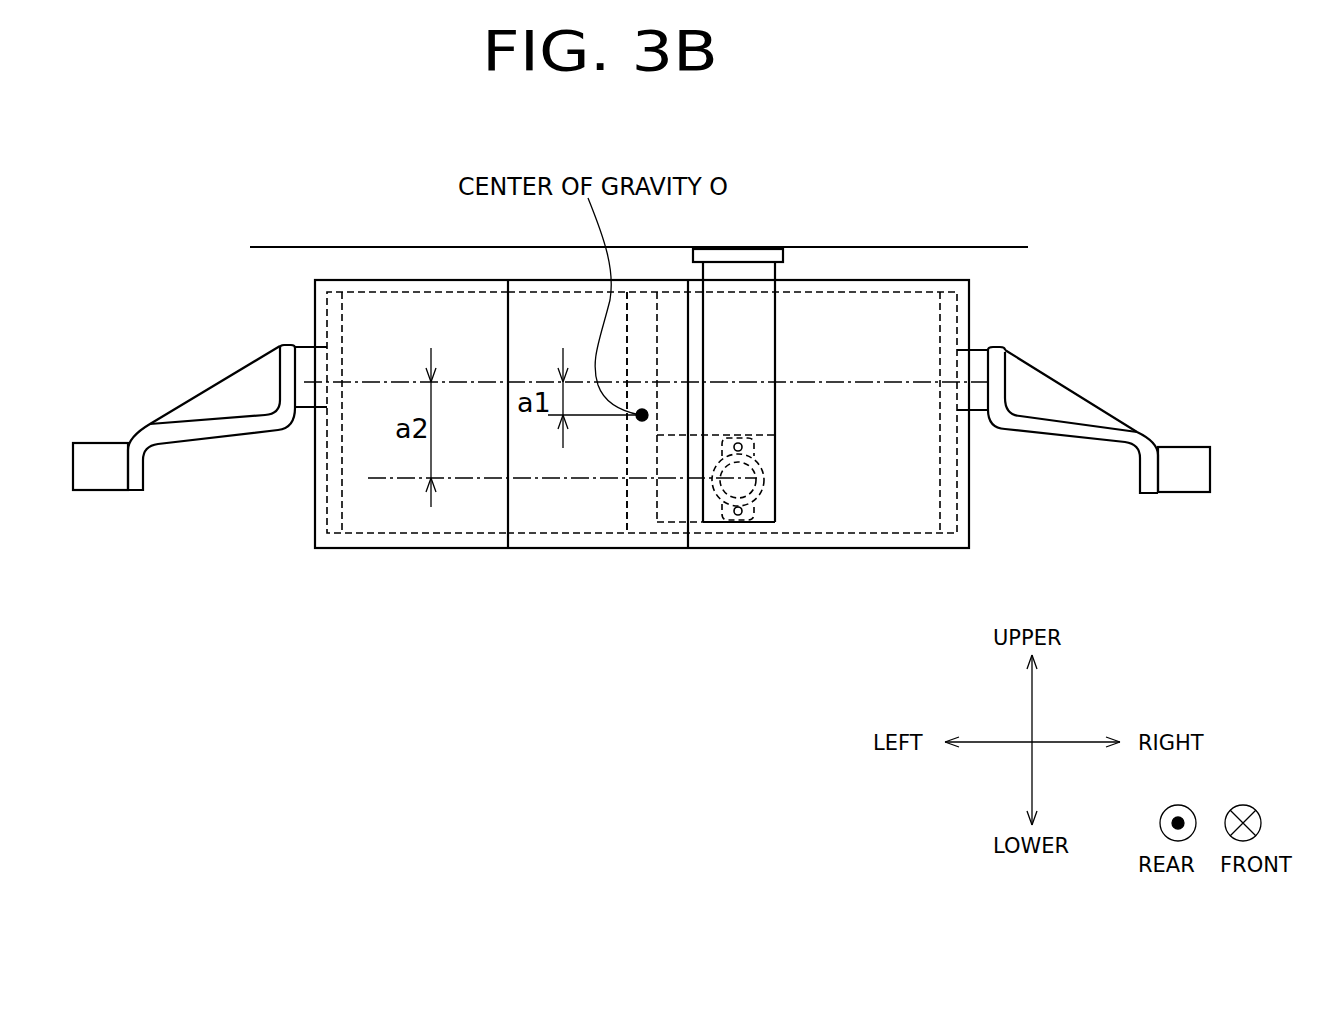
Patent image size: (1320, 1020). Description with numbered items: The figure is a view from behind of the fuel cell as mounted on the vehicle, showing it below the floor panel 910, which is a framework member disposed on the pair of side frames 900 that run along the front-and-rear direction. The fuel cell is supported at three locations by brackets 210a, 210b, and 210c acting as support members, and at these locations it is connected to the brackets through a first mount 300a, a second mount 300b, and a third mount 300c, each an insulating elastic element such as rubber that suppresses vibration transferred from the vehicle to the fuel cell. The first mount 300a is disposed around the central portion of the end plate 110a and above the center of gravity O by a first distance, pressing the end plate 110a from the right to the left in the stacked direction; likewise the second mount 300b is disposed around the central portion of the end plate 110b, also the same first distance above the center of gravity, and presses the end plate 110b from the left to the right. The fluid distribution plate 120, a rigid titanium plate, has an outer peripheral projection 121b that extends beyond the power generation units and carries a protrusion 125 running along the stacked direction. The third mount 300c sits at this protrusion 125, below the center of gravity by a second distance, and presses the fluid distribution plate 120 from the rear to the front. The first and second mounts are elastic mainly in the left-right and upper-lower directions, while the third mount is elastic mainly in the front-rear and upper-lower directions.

The floor panel 910 is at (457, 246).
The end plate 110a is at (955, 538).
The end plate 110b is at (337, 535).
The fluid distribution plate 120 is at (643, 520).
The projection 121b is at (598, 494).
The protrusion 125 is at (678, 505).
The bracket 210a is at (1033, 428).
The bracket 210b is at (223, 427).
The bracket 210c is at (777, 345).
The first mount 300a is at (975, 360).
The second mount 300b is at (305, 400).
The third mount 300c is at (770, 502).
The side frame 900 is at (95, 477).